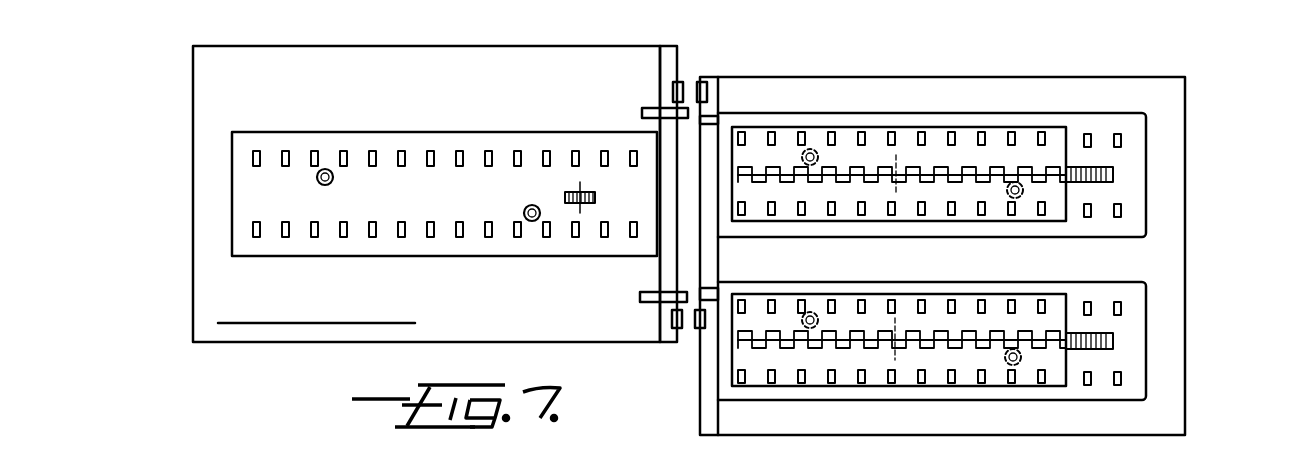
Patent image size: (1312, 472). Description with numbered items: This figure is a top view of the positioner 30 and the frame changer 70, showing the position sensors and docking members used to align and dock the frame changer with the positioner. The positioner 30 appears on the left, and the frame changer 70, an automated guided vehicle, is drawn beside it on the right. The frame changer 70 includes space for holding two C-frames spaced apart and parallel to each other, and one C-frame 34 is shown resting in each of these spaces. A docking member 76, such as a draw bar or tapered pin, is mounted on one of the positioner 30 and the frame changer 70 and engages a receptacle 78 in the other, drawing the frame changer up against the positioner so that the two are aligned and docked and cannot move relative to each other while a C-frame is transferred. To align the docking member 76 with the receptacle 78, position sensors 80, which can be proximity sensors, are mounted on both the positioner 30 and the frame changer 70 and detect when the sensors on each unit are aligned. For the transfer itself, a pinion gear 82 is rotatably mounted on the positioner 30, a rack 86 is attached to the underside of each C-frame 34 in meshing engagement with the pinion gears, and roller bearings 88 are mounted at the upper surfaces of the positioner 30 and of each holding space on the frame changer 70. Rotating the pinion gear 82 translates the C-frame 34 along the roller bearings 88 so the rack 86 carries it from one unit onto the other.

The positioner 30 is at (216, 265).
The C-frame 34 is at (968, 118).
The frame changer 70 is at (1192, 146).
The docking member 76 is at (652, 108).
The receptacle 78 is at (722, 110).
The position sensors 80 is at (679, 82).
The pinion gear 82 is at (576, 190).
The rack 86 is at (1113, 176).
The roller bearings 88 is at (314, 151).